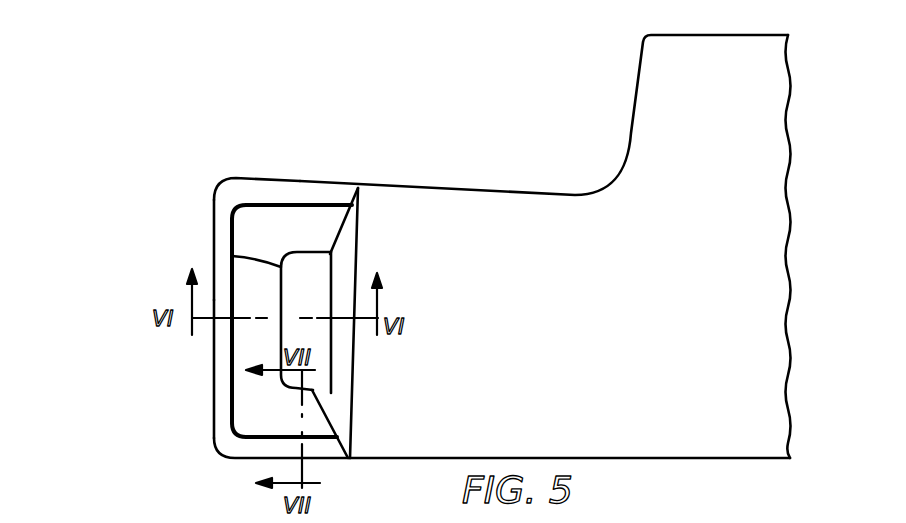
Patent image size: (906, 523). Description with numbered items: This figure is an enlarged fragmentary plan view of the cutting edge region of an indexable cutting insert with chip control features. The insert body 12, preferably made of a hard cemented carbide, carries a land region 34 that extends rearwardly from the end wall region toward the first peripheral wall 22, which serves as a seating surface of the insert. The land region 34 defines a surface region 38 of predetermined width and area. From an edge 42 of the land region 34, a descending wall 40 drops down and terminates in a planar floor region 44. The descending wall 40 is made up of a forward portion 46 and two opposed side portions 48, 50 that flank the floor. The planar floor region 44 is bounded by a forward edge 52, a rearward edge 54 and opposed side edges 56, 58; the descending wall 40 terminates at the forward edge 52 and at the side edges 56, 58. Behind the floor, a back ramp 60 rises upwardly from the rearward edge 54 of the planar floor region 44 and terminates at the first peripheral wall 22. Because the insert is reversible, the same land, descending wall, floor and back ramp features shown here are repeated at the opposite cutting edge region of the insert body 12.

The insert body 12 is at (556, 210).
The first peripheral wall 22 is at (607, 318).
The land region 34 is at (214, 198).
The surface region 38 is at (243, 184).
The side portion of descending wall 48 is at (280, 213).
The planar floor region 44 is at (312, 252).
The forward edge of planar floor 52 is at (250, 280).
The forward portion of descending wall 46 is at (232, 268).
The side edge of planar floor 56 is at (310, 253).
The rearward edge of planar floor 54 is at (332, 267).
The edge of land 42 is at (231, 353).
The descending wall 40 is at (242, 393).
The back ramp 60 is at (343, 360).
The side edge of planar floor 58 is at (314, 391).
The side portion of descending wall 50 is at (265, 418).